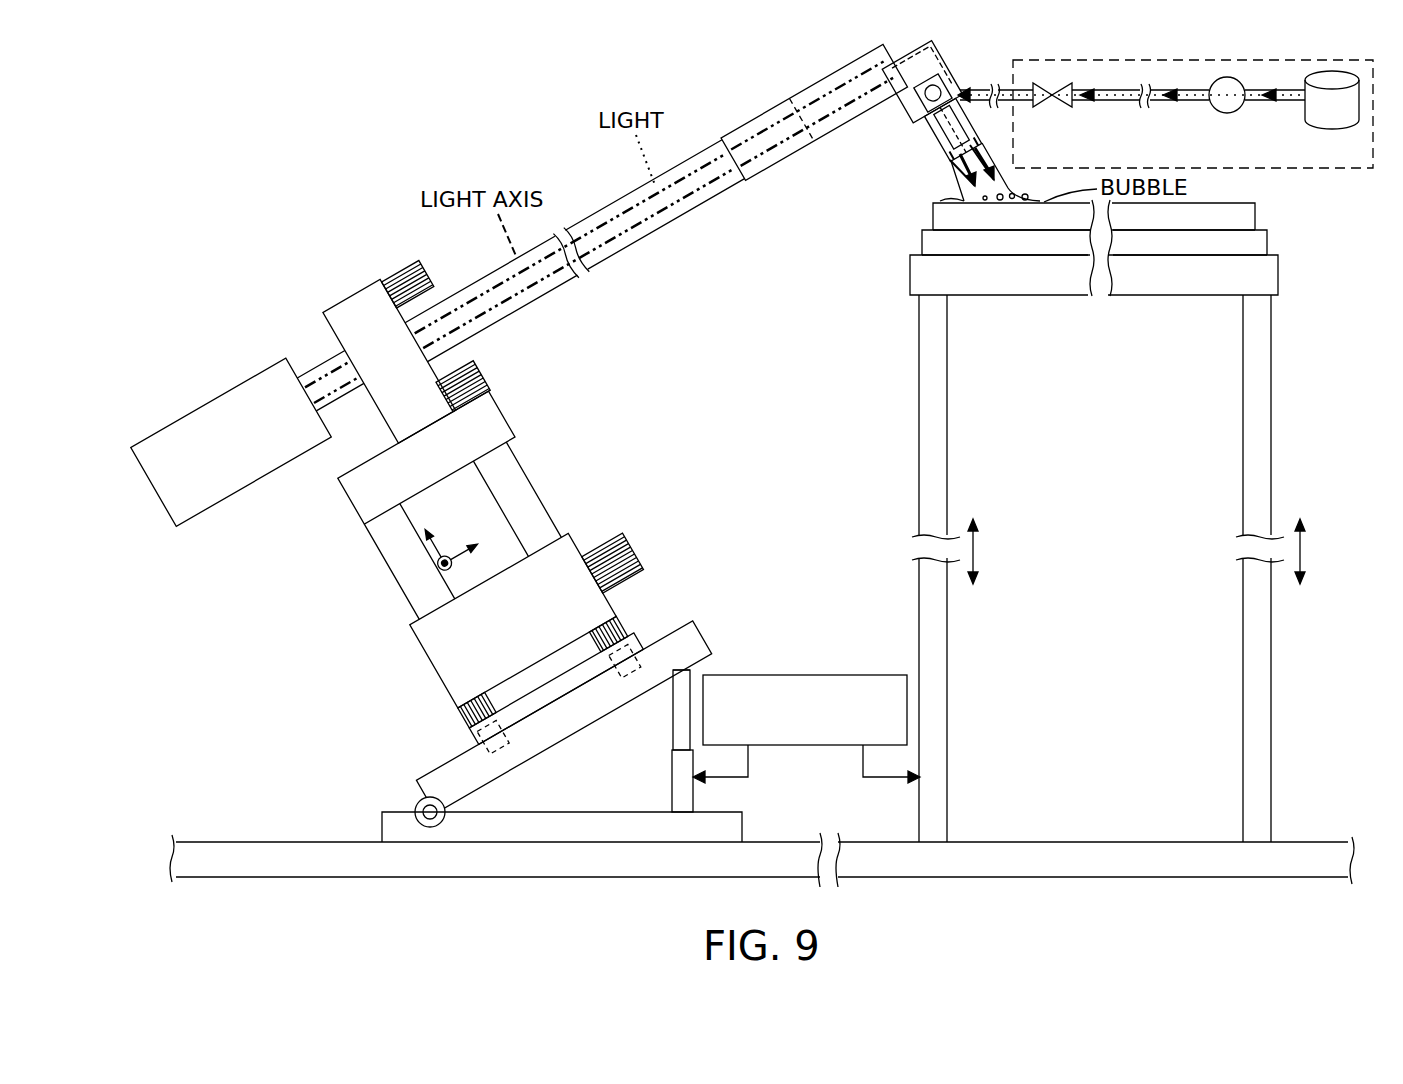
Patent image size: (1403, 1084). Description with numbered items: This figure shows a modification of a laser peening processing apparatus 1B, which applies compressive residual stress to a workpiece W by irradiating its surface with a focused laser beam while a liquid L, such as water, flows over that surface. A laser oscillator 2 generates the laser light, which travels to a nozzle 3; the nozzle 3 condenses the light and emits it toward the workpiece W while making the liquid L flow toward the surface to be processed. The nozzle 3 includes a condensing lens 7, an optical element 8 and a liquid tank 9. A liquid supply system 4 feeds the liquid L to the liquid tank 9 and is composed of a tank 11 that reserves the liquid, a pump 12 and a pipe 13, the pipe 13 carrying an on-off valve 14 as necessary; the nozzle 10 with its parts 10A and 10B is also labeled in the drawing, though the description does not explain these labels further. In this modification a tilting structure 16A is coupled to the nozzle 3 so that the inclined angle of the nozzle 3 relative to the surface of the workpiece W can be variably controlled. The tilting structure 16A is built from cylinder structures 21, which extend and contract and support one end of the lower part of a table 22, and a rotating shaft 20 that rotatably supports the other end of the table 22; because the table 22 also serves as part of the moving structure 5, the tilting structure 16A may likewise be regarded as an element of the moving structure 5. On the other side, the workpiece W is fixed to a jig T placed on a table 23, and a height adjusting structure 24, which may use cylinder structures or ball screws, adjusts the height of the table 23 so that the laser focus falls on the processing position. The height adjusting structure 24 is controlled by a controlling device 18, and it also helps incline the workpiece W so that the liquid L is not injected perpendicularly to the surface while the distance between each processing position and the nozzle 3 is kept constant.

The laser peening processing apparatus 1B is at (370, 150).
The laser oscillator 2 is at (262, 372).
The nozzle 3 is at (763, 113).
The liquid supply system 4 is at (1331, 180).
The moving structure 5 is at (340, 504).
The condensing lens 7 is at (802, 136).
The optical element 8 is at (926, 74).
The liquid tank 9 is at (908, 116).
The nozzle 10 is at (882, 150).
The inner nozzle 10A is at (947, 115).
The outer nozzle 10B is at (968, 152).
The tank 11 is at (1335, 122).
The pump 12 is at (1221, 114).
The pipe 13 is at (1104, 102).
The on-off valve 14 is at (1040, 108).
The tilting structure 16A is at (668, 716).
The controlling device 18 is at (806, 675).
The rotating shaft 20 is at (412, 800).
The cylinder structures 21 is at (670, 740).
The table 22 is at (707, 640).
The table 23 is at (910, 276).
The height adjusting structure 24 is at (918, 350).
The liquid L is at (986, 180).
The workpiece W is at (930, 212).
The jig T is at (918, 243).